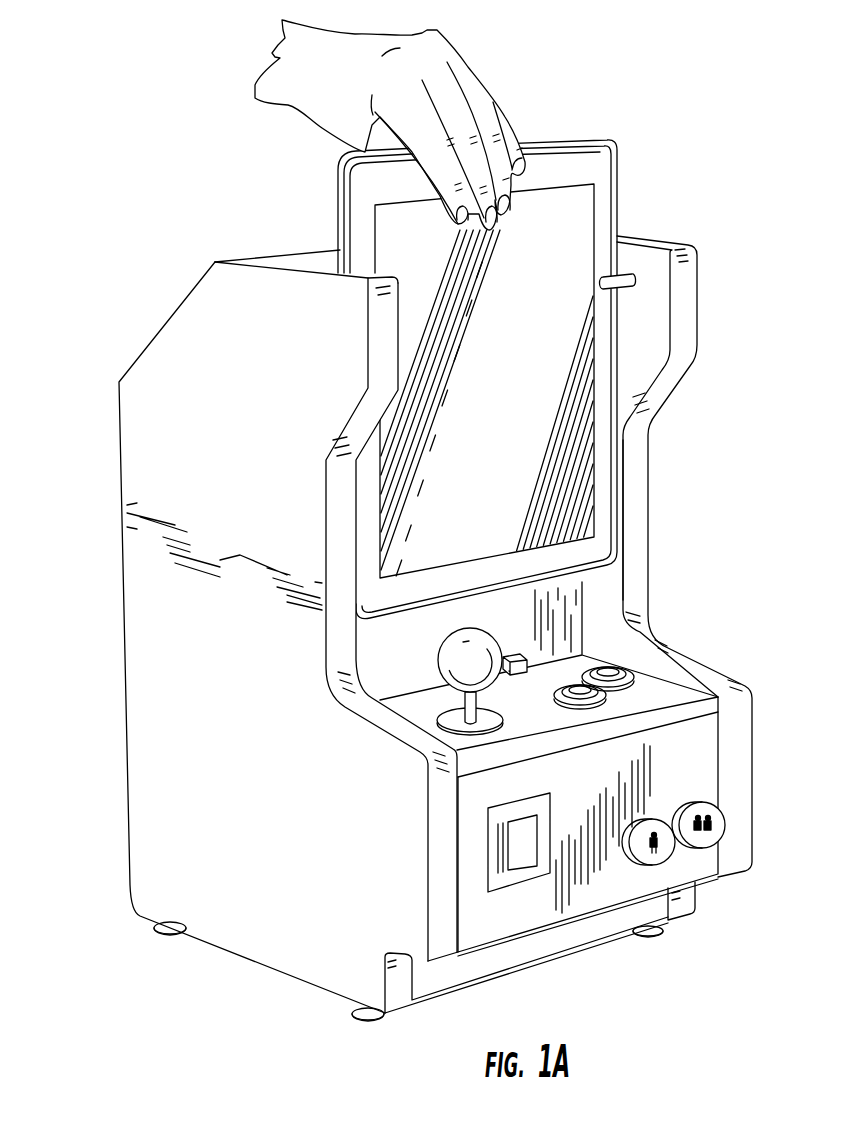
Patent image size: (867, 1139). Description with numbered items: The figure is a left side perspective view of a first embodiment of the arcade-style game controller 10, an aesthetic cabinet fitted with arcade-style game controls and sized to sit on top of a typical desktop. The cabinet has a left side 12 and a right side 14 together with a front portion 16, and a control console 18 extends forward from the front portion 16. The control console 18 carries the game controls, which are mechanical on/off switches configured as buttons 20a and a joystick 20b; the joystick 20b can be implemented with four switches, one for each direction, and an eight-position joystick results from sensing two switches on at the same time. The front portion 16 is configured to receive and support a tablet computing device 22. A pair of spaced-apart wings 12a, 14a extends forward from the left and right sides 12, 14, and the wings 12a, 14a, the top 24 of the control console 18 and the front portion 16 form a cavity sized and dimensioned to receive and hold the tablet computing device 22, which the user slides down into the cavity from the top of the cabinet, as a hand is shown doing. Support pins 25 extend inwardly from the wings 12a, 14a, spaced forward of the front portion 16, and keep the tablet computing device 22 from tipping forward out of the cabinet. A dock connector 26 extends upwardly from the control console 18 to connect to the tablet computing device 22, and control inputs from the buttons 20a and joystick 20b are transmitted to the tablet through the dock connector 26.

The game controller 10 is at (153, 213).
The left side 12 is at (690, 317).
The wing 12a is at (603, 610).
The right side 14 is at (168, 672).
The wing 14a is at (355, 662).
The front portion 16 is at (570, 630).
The control console 18 is at (612, 890).
The buttons 20a is at (600, 692).
The joystick 20b is at (450, 660).
The tablet computing device 22 is at (593, 162).
The top of the control console 24 is at (553, 715).
The support pins 25 is at (624, 275).
The dock connector 26 is at (527, 668).